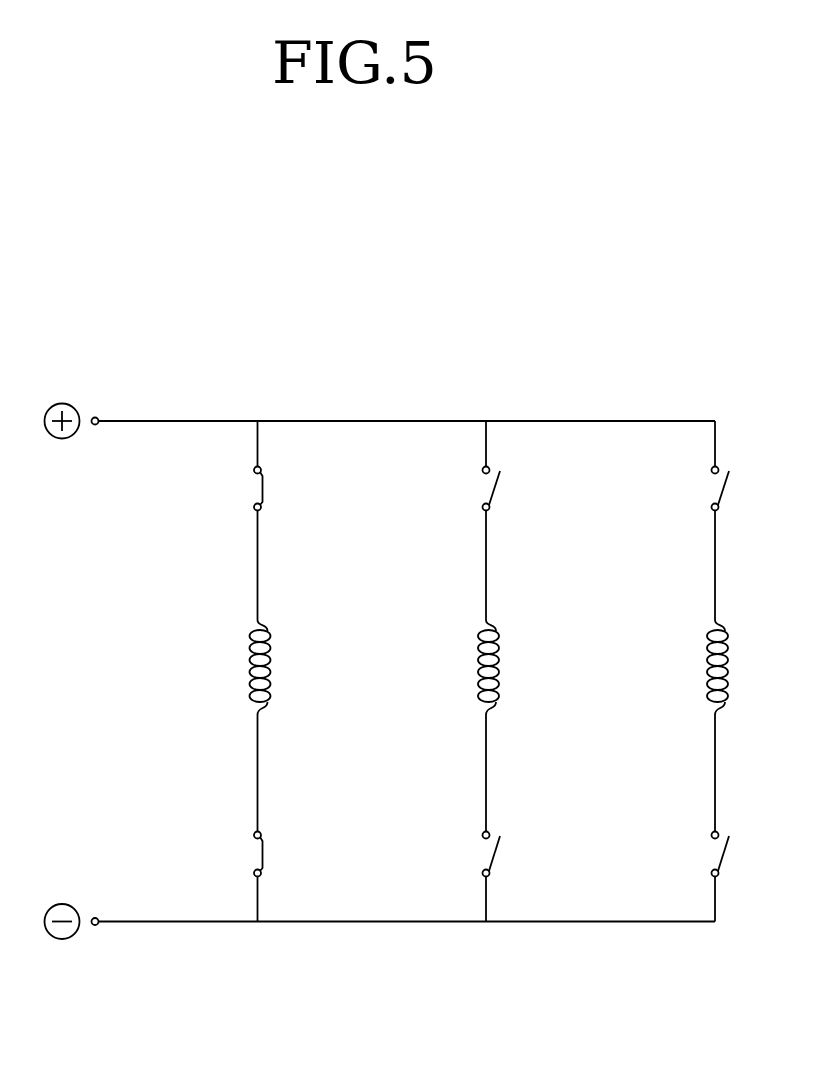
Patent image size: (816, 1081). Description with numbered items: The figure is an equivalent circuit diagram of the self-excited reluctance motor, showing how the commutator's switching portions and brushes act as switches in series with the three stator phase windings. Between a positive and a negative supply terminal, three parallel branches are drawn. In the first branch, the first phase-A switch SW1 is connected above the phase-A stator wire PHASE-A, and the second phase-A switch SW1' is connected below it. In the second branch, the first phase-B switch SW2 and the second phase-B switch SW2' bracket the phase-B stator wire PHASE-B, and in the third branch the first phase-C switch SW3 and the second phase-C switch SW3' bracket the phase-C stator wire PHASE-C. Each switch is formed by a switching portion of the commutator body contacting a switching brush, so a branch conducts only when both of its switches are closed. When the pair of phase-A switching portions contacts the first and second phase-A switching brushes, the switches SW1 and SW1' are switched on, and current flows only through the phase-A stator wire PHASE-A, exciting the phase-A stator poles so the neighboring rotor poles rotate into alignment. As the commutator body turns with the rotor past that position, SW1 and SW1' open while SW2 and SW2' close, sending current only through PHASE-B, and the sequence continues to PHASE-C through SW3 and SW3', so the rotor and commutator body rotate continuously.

The first phase-A switch SW1 is at (220, 488).
The first phase-B switch SW2 is at (454, 488).
The first phase-C switch SW3 is at (683, 488).
The second phase-A switch SW1' is at (220, 853).
The second phase-B switch SW2' is at (454, 853).
The second phase-C switch SW3' is at (683, 853).
The phase-A stator wire PHASE-A is at (189, 667).
The phase-B stator wire PHASE-B is at (421, 667).
The phase-C stator wire PHASE-C is at (648, 667).